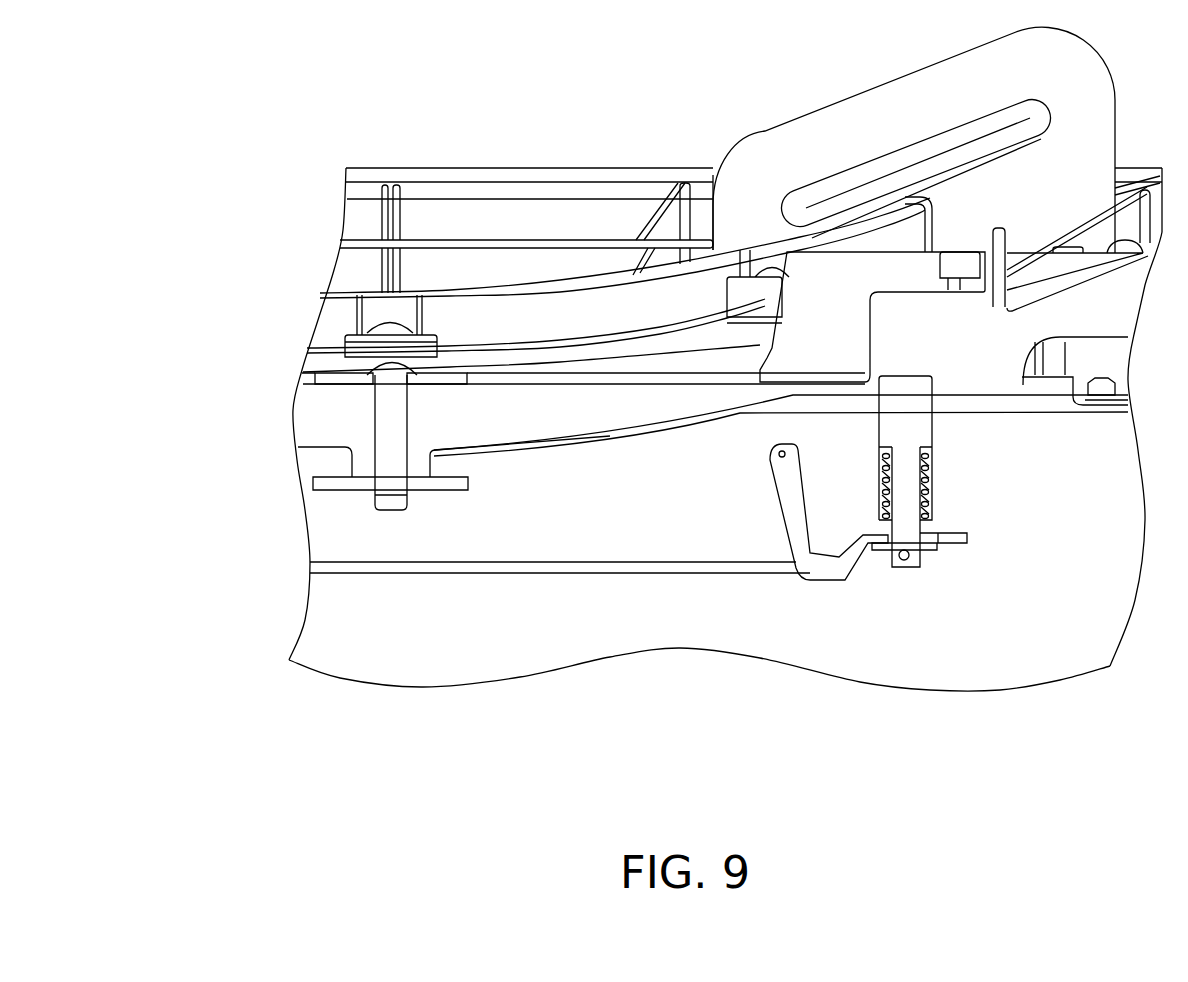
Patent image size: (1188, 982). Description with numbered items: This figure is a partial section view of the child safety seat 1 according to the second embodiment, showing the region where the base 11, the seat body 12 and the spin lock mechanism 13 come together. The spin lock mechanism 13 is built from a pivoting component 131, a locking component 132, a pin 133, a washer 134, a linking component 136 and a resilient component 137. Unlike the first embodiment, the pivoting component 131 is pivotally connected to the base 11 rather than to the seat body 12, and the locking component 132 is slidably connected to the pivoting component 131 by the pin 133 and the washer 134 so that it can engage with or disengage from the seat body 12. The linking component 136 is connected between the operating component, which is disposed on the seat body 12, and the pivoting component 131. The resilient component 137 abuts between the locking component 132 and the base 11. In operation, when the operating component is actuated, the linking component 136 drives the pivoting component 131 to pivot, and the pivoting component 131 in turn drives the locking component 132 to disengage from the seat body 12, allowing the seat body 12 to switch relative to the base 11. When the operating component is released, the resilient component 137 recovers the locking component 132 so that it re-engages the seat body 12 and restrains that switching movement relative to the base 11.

The child safety seat 1 is at (170, 100).
The base 11 is at (1050, 602).
The seat body 12 is at (900, 355).
The spin lock mechanism 13 is at (1015, 742).
The pivoting component 131 is at (795, 503).
The locking component 132 is at (911, 523).
The pin 133 is at (904, 560).
The washer 134 is at (880, 548).
The linking component 136 is at (658, 567).
The resilient component 137 is at (927, 487).